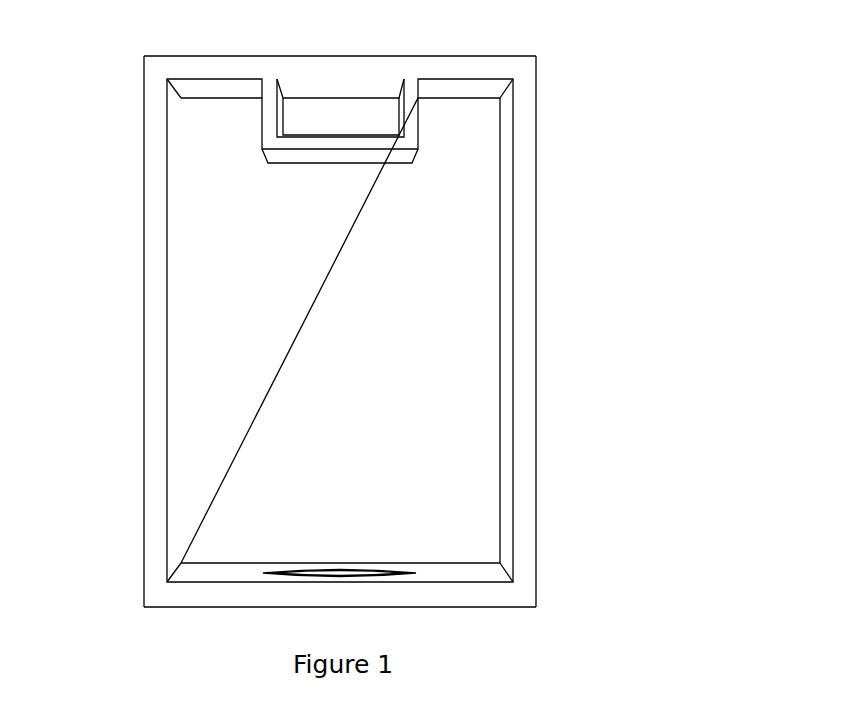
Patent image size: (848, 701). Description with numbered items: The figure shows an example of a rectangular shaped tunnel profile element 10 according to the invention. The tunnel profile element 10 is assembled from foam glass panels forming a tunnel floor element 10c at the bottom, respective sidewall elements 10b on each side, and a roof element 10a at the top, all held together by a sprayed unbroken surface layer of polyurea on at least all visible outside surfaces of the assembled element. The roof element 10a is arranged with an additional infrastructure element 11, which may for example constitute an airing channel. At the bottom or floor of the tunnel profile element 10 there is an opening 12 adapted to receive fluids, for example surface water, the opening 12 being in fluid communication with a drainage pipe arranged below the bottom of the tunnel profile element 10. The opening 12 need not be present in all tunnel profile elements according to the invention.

The tunnel profile element 10 is at (580, 227).
The roof element 10a is at (204, 55).
The sidewall elements 10b is at (144, 295).
The tunnel floor element 10c is at (191, 609).
The additional infrastructure element 11 is at (333, 112).
The opening 12 is at (336, 573).